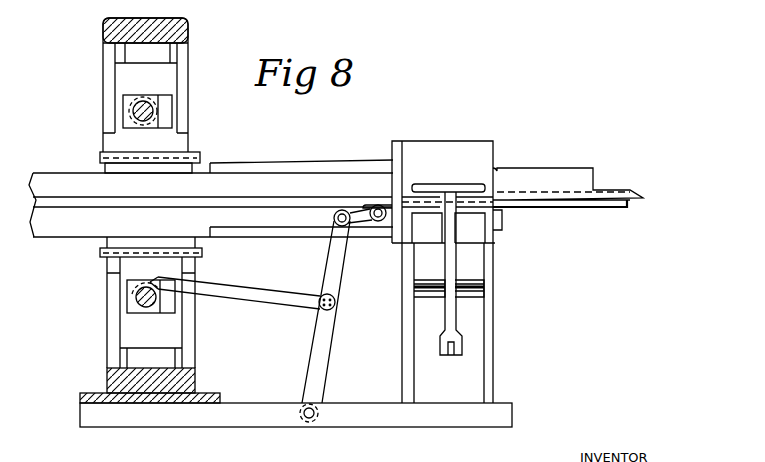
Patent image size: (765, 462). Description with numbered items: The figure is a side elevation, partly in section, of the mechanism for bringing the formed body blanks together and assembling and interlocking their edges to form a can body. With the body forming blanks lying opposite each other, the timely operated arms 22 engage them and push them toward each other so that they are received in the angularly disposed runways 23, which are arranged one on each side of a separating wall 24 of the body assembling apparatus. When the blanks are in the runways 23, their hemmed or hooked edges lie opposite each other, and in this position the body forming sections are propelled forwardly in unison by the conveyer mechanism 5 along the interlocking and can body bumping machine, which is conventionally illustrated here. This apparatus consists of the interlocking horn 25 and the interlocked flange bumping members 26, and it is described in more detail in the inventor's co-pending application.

The conveyer mechanism 5 is at (645, 184).
The timely operated arms 22 is at (450, 232).
The angularly disposed runways 23 is at (453, 173).
The separating wall 24 is at (432, 141).
The interlocking horn 25 is at (232, 170).
The interlocked flange bumping members 26 is at (112, 153).